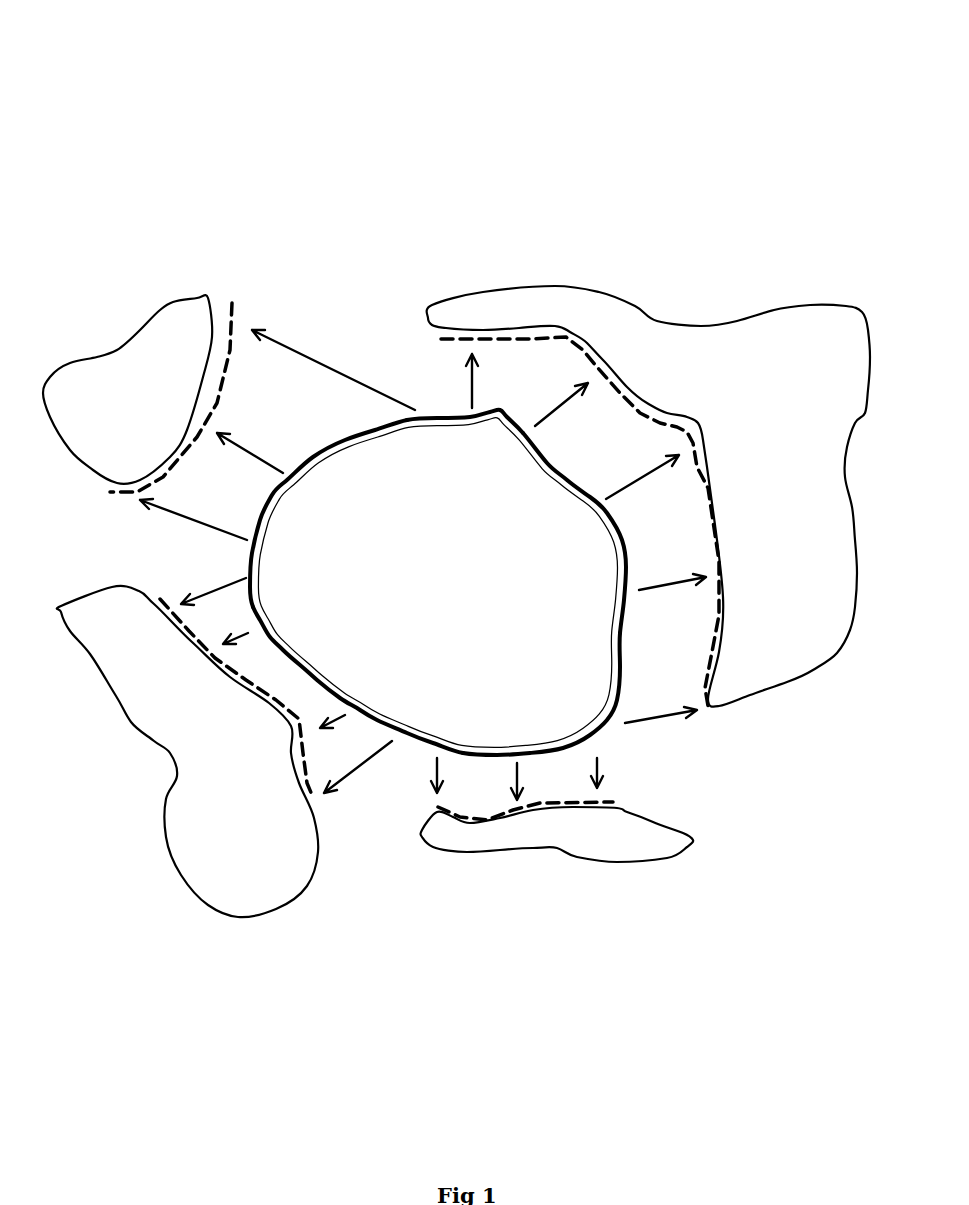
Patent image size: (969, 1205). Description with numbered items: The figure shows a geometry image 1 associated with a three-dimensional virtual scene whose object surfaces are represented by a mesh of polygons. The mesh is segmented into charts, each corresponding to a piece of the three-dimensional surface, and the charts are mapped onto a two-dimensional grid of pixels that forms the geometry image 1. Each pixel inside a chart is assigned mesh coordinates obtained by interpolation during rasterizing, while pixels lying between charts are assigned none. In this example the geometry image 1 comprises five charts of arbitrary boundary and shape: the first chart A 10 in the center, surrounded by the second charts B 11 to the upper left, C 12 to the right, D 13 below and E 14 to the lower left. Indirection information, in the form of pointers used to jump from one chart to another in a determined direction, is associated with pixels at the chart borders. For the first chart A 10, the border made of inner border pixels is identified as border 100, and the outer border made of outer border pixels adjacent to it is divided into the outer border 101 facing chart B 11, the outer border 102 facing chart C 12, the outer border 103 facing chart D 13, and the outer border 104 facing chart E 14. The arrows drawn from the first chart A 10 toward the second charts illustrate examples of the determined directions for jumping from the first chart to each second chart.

The geometry image 1 is at (608, 201).
The first chart A 10 is at (436, 442).
The chart B 11 is at (180, 337).
The chart C 12 is at (835, 330).
The chart D 13 is at (668, 845).
The chart E 14 is at (248, 890).
The border 100 is at (508, 426).
The outer border 101 is at (263, 512).
The outer border 102 is at (588, 490).
The outer border 103 is at (563, 745).
The outer border 104 is at (280, 652).